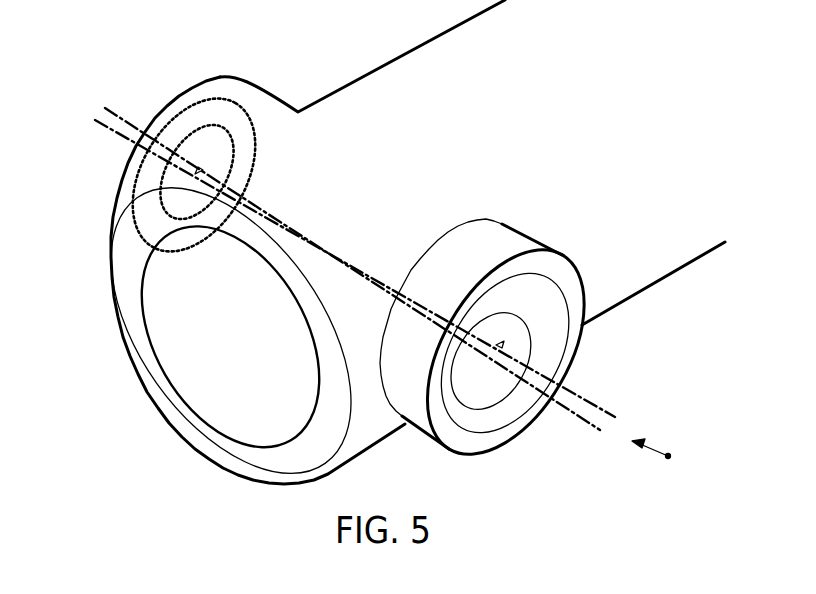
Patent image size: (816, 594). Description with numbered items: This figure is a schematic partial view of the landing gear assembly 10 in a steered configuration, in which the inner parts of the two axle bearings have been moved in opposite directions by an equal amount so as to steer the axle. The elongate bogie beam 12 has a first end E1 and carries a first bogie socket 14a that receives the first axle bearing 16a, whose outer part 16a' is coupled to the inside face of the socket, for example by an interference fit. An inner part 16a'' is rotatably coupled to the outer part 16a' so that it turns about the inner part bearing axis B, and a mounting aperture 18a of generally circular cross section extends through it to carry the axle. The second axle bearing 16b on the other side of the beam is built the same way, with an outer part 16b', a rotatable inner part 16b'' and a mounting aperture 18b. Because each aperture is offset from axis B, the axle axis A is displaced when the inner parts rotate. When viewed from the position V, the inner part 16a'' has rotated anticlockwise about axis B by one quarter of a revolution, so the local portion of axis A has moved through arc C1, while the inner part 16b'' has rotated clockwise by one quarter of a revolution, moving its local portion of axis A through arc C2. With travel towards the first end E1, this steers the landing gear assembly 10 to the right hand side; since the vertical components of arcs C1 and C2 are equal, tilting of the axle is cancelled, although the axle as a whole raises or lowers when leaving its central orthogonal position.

The landing gear assembly 10 is at (622, 70).
The bogie beam 12 is at (642, 272).
The bogie socket 14a is at (571, 329).
The first axle bearing 16a is at (506, 352).
The outer part 16a' is at (526, 336).
The inner part 16a'' is at (501, 457).
The second axle bearing 16b is at (104, 200).
The outer part 16b' is at (188, 167).
The inner part 16b'' is at (97, 158).
The mounting aperture 18a is at (472, 397).
The mounting aperture 18b is at (213, 132).
The arc C1 is at (502, 348).
The arc C2 is at (202, 171).
The first end E1 is at (197, 362).
The axle axis A is at (576, 413).
The inner part bearing axis B is at (606, 416).
The viewing position V is at (662, 457).